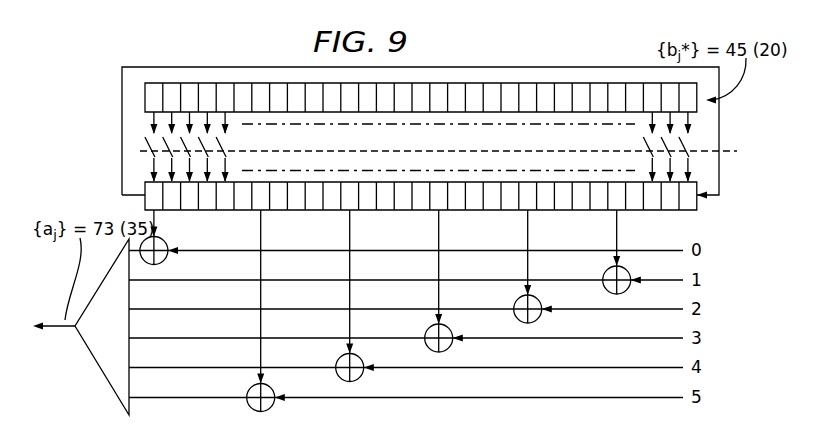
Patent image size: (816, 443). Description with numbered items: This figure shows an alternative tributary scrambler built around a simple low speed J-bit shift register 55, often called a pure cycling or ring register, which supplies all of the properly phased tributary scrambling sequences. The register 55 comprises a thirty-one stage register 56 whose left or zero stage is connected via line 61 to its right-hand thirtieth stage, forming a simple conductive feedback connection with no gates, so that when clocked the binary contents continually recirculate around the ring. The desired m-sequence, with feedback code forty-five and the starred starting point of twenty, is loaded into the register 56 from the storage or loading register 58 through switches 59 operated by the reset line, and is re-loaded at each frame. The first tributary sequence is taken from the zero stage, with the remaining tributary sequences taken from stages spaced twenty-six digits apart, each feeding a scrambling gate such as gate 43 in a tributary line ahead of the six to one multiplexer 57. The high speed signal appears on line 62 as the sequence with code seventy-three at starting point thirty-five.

The feedback line 61 is at (156, 67).
The loading register 58 is at (140, 96).
The J-bit shift register 55 is at (132, 144).
The switches 59 is at (136, 163).
The 31-stage register 56 is at (696, 221).
The scrambling gate 43 is at (166, 243).
The 6:1 multiplexer 57 is at (93, 361).
The output line 62 is at (58, 333).